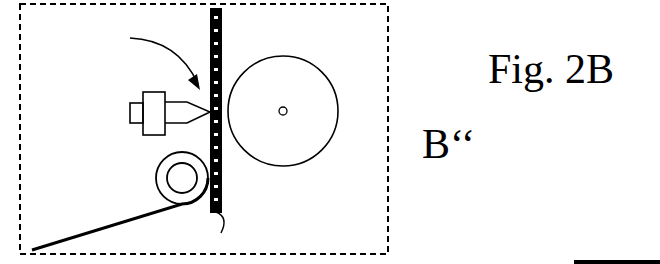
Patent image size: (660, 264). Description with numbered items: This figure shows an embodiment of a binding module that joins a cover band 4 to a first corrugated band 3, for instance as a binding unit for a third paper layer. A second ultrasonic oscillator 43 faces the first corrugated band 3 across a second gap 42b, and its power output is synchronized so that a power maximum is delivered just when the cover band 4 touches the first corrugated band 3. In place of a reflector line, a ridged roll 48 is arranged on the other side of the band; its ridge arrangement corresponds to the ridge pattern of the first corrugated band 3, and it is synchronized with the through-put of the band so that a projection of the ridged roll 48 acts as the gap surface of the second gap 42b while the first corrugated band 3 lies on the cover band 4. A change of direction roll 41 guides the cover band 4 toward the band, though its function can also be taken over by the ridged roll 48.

The first corrugated band 3 is at (220, 214).
The cover band 4 is at (110, 223).
The change of direction roll 41 is at (200, 188).
The second gap 42b is at (144, 59).
The second ultrasonic oscillator 43 is at (155, 112).
The ridged roll 48 is at (310, 132).